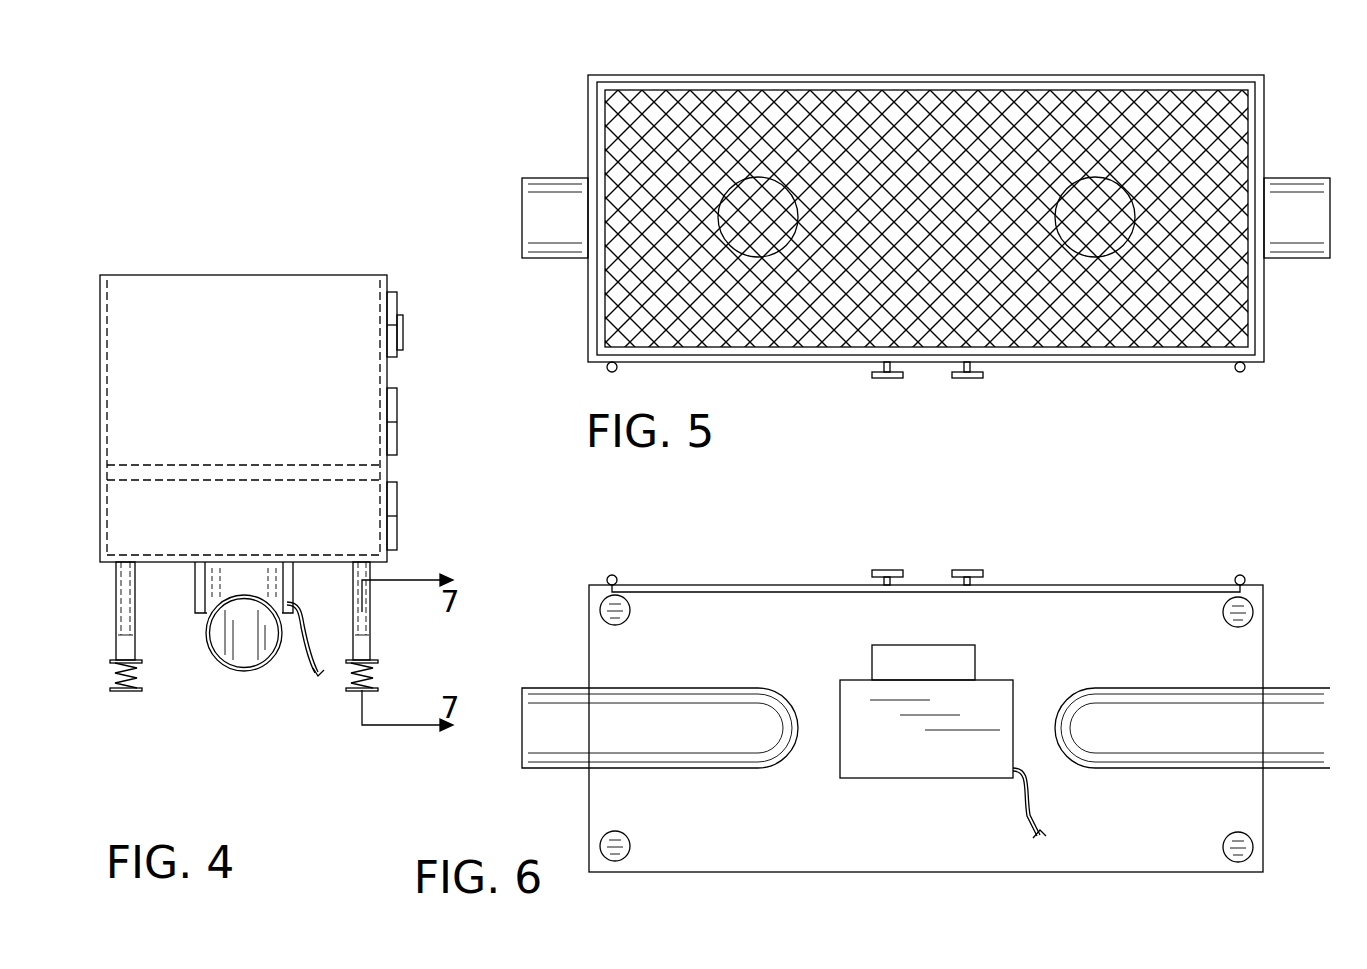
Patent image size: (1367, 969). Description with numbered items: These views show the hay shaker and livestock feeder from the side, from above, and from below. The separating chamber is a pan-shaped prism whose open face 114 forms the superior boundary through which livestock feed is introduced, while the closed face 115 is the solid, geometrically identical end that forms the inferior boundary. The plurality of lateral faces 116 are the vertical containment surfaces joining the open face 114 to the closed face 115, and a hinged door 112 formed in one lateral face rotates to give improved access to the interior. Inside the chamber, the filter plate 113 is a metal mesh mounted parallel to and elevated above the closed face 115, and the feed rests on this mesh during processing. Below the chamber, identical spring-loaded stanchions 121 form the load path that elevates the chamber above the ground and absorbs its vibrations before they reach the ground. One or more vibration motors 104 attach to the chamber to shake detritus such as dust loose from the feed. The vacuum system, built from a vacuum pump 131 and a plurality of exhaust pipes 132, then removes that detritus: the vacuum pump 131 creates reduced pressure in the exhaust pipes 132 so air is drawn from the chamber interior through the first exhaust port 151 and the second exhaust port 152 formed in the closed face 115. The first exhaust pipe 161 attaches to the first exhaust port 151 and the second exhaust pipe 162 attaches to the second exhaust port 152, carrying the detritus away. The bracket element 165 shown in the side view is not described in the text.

In FIG. 6, the vibration motor 104 is at (972, 662).
In FIG. 4, the door 112 is at (388, 375).
In FIG. 5, the door 112 is at (926, 226).
In FIG. 6, the door 112 is at (1043, 585).
In FIG. 5, the filter plate 113 is at (928, 112).
In FIG. 4, the open face 114 is at (248, 277).
In FIG. 6, the closed face 115 is at (1235, 670).
In FIG. 4, the lateral faces 116 is at (125, 407).
In FIG. 6, the lateral faces 116 is at (1277, 857).
In FIG. 4, the spring-loaded stanchion 121 is at (118, 598).
In FIG. 6, the spring-loaded stanchion 121 is at (1250, 608).
In FIG. 6, the vacuum pump 131 is at (905, 755).
In FIG. 6, the exhaust pipes 132 is at (743, 770).
In FIG. 5, the first exhaust port 151 is at (765, 228).
In FIG. 5, the second exhaust port 152 is at (1090, 200).
In FIG. 4, the first exhaust pipe 161 is at (261, 663).
In FIG. 5, the first exhaust pipe 161 is at (548, 188).
In FIG. 6, the first exhaust pipe 161 is at (1278, 728).
In FIG. 5, the second exhaust pipe 162 is at (1290, 195).
In FIG. 6, the second exhaust pipe 162 is at (568, 743).
In FIG. 4, the bracket 165 is at (162, 562).